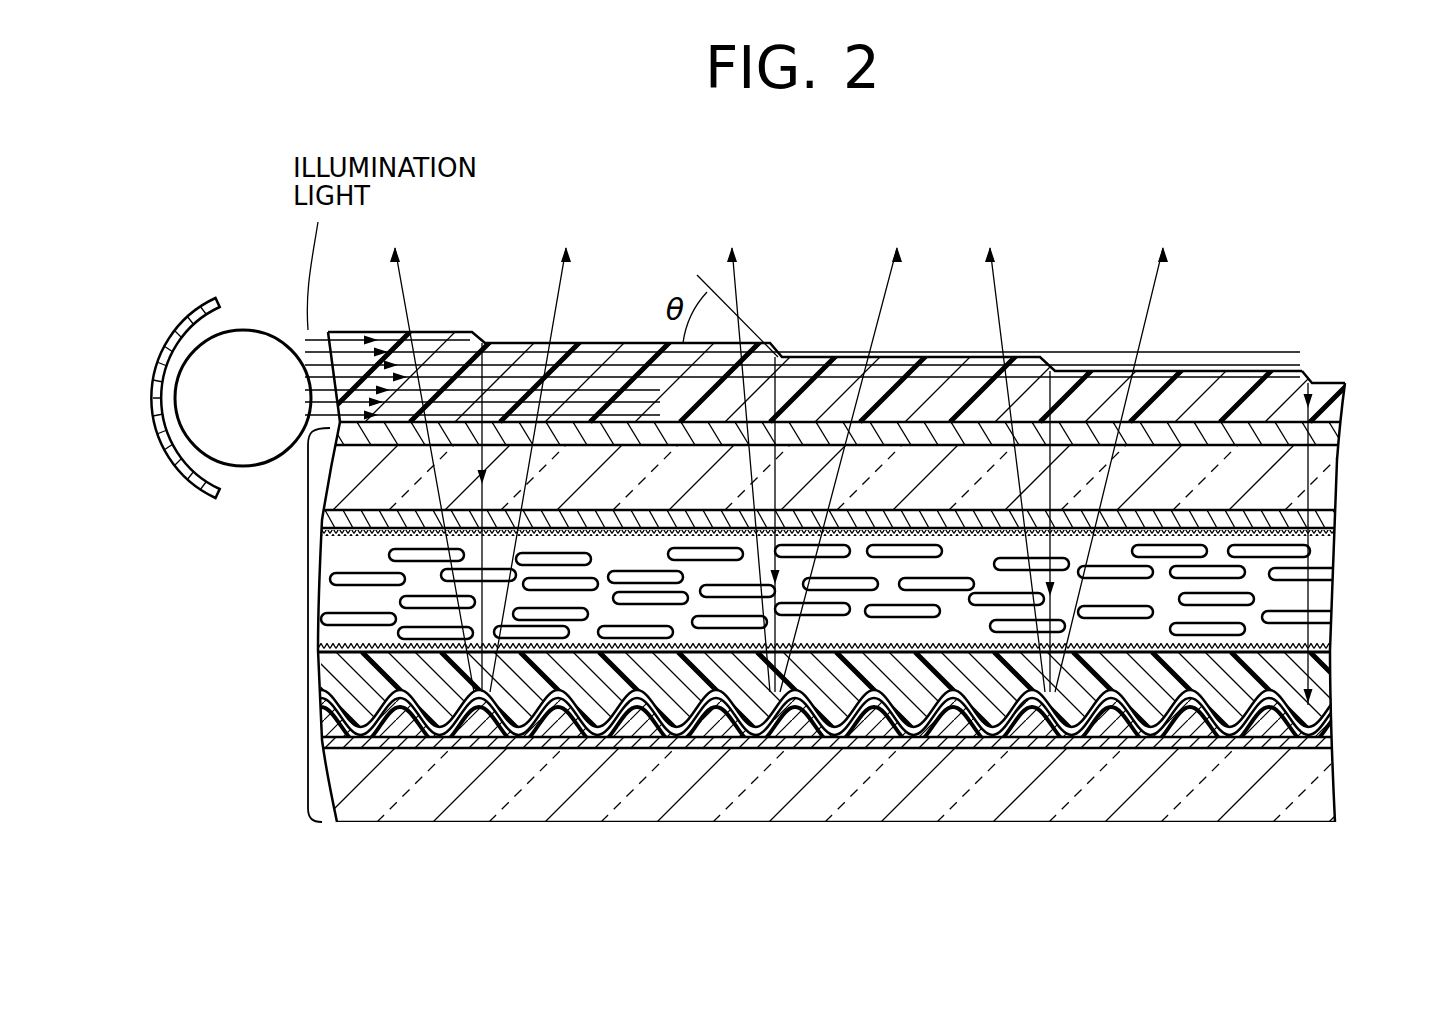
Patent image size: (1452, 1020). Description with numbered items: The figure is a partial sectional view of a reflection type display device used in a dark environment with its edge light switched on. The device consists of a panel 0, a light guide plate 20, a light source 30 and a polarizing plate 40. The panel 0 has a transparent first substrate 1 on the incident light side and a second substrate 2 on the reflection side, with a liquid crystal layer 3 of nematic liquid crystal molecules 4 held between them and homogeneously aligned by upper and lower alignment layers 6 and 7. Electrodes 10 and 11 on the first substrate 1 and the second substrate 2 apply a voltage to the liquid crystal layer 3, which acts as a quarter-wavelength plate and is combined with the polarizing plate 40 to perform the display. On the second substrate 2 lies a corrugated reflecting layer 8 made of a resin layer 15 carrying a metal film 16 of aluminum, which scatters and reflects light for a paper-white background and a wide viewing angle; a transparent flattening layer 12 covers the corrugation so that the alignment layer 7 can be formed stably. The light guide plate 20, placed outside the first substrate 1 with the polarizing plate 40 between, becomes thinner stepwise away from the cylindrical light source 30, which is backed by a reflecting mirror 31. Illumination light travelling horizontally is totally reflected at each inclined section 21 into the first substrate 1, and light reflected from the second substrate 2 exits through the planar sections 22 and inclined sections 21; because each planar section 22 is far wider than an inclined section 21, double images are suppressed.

The panel 0 is at (308, 667).
The first substrate 1 is at (1323, 470).
The second substrate 2 is at (1295, 788).
The liquid crystal layer 3 is at (822, 588).
The liquid crystal molecules 4 is at (388, 553).
The upper alignment layer 6 is at (599, 538).
The lower alignment layer 7 is at (357, 645).
The reflecting layer 8 is at (836, 784).
The electrode 10 is at (1327, 517).
The electrode 11 is at (1327, 738).
The flattening layer 12 is at (362, 695).
The resin layer 15 is at (640, 727).
The metal film 16 is at (537, 710).
The light guide plate 20 is at (1334, 402).
The inclined section 21 is at (1311, 381).
The planar section 22 is at (1225, 370).
The light source 30 is at (243, 329).
The reflecting mirror 31 is at (195, 300).
The polarizing plate 40 is at (1330, 433).